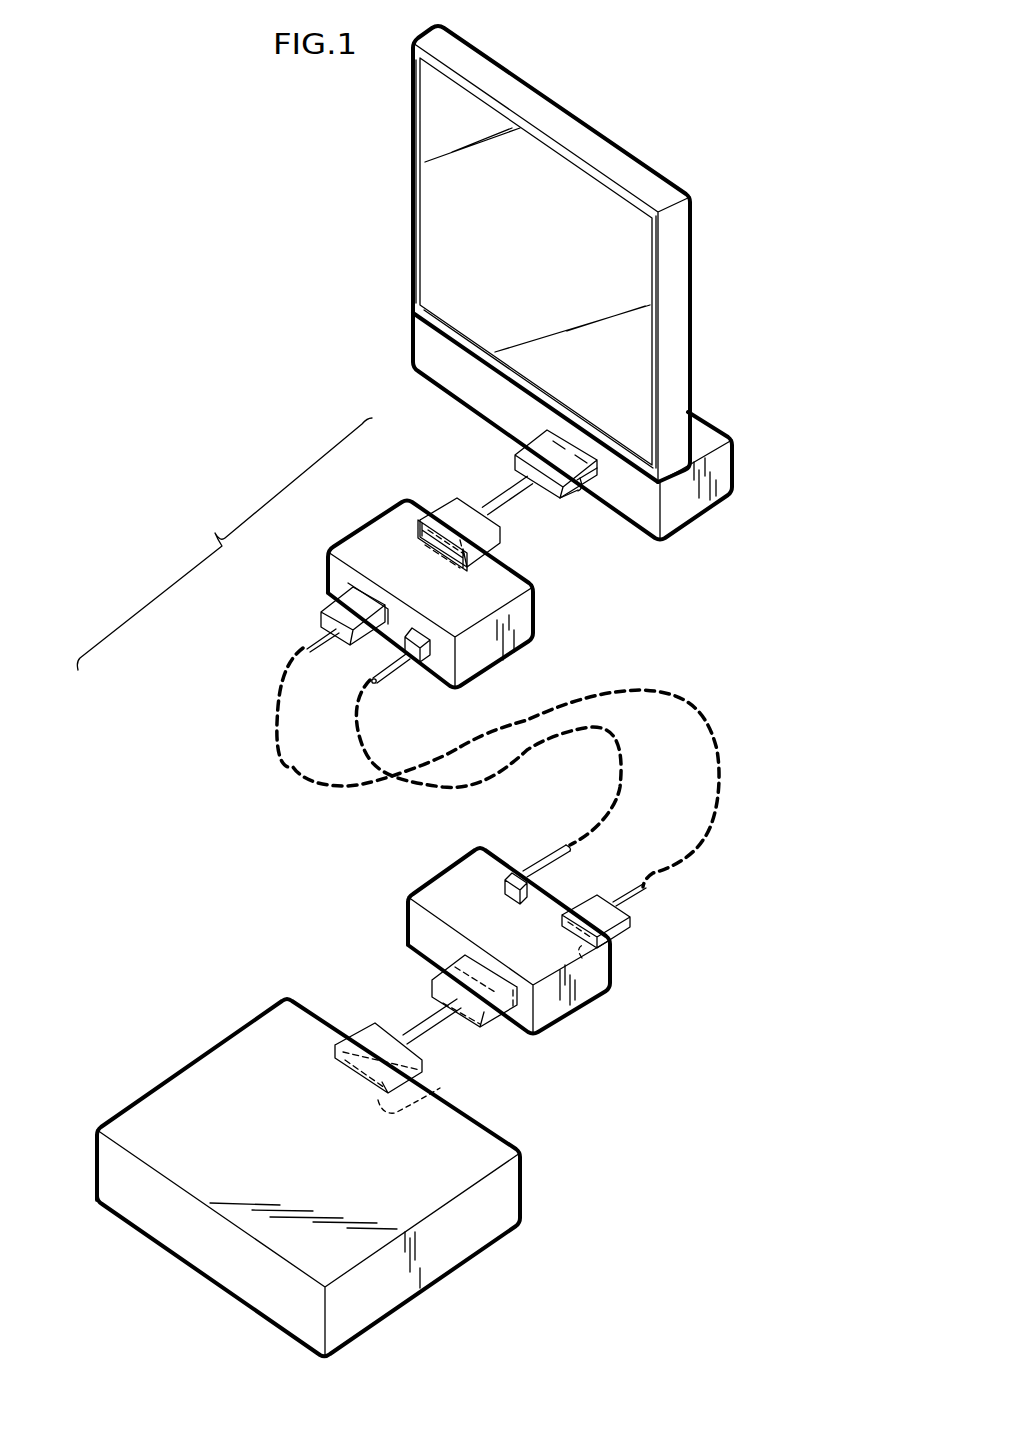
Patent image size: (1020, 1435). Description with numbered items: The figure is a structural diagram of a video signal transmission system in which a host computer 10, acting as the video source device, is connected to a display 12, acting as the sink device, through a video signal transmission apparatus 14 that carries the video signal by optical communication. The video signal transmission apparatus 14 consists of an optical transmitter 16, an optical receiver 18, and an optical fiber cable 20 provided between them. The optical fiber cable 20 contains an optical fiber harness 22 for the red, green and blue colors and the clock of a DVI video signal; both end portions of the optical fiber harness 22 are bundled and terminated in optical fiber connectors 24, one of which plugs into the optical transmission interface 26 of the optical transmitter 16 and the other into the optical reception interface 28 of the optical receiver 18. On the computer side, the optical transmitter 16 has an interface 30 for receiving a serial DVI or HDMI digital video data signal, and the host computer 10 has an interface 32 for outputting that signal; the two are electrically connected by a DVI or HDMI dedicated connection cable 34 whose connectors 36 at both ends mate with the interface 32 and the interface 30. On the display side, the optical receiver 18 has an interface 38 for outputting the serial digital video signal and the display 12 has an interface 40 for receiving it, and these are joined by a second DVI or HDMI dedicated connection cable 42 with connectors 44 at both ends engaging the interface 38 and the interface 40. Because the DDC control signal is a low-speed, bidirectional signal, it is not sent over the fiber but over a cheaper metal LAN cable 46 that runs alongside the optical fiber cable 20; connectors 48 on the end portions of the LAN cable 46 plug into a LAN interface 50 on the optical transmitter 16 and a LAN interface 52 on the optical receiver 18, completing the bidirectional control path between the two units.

The host computer 10 is at (187, 1062).
The display 12 is at (557, 104).
The video signal transmission apparatus 14 is at (224, 544).
The optical transmitter 16 is at (553, 1022).
The optical receiver 18 is at (537, 608).
The optical fiber cable 20 is at (720, 750).
The optical fiber harness 22 is at (312, 632).
The optical fiber connector 24 is at (327, 610).
The optical transmission interface 26 is at (582, 958).
The optical reception interface 28 is at (353, 597).
The interface 30 is at (517, 1005).
The interface 32 is at (440, 1088).
The DVI or HDMI dedicated connection cable 34 is at (408, 1022).
The connector 36 is at (465, 977).
The interface 38 is at (460, 570).
The interface 40 is at (578, 490).
The DVI or HDMI dedicated connection cable 42 is at (504, 487).
The connector 44 is at (530, 443).
The LAN cable 46 is at (613, 803).
The connector 48 is at (427, 667).
The LAN interface 50 is at (493, 883).
The LAN interface 52 is at (408, 628).